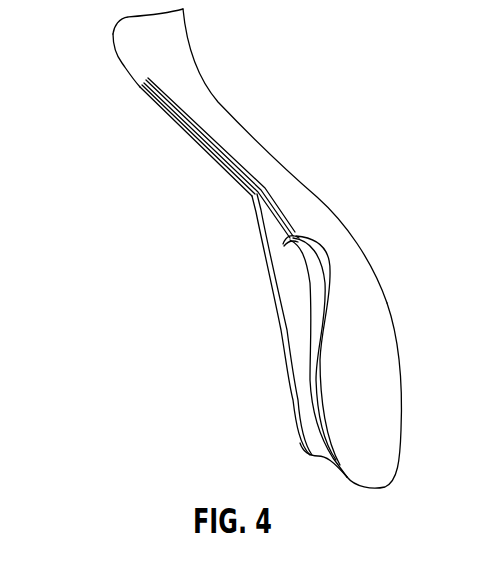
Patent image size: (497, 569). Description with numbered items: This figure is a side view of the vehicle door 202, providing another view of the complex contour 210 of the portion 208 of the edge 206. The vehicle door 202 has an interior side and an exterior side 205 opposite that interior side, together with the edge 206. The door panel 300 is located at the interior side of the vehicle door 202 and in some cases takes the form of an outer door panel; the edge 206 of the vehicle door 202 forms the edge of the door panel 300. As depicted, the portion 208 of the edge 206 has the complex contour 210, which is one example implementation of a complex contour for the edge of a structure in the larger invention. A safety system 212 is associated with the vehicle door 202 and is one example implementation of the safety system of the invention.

The door panel 300 is at (113, 34).
The vehicle door 202 is at (162, 53).
The exterior side 205 is at (218, 115).
The edge 206 is at (317, 337).
The portion 208 is at (300, 212).
The complex contour 210 is at (310, 227).
The safety system 212 is at (279, 250).